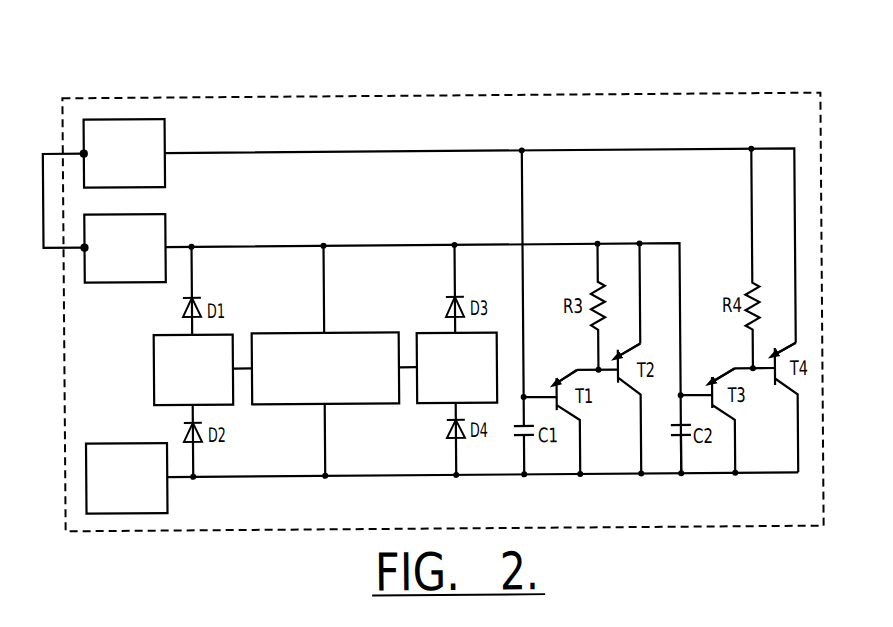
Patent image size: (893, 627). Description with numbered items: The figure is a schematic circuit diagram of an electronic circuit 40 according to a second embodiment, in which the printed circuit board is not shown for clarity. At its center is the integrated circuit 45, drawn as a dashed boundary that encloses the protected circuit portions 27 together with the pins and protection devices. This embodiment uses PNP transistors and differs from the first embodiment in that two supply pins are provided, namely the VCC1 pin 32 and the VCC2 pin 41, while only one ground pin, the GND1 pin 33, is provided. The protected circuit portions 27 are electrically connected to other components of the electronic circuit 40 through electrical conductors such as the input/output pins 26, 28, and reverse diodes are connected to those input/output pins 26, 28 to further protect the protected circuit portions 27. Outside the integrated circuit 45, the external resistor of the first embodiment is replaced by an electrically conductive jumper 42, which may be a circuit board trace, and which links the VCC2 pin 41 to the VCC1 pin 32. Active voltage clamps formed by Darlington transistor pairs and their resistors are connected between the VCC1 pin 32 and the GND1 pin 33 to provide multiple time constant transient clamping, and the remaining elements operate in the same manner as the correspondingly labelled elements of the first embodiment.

The electronic circuit 40 is at (443, 275).
The integrated circuit 45 is at (550, 95).
The VCC2 pin 41 is at (168, 130).
The VCC1 pin 32 is at (168, 226).
The GND1 pin 33 is at (167, 493).
The input/output pin 28 is at (220, 331).
The input/output pin 26 is at (431, 403).
The protected circuit portions 27 is at (340, 331).
The electrically conductive jumper 42 is at (58, 150).